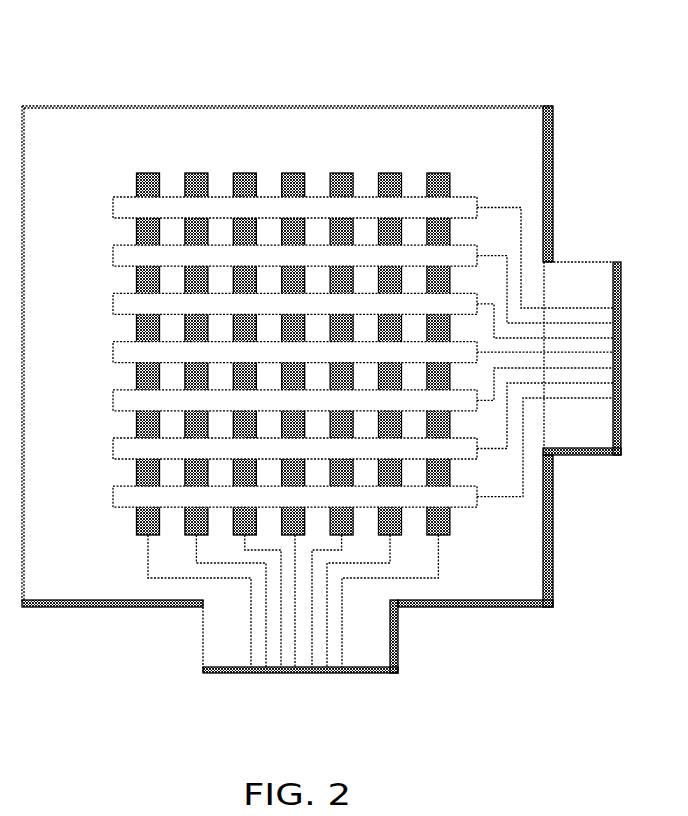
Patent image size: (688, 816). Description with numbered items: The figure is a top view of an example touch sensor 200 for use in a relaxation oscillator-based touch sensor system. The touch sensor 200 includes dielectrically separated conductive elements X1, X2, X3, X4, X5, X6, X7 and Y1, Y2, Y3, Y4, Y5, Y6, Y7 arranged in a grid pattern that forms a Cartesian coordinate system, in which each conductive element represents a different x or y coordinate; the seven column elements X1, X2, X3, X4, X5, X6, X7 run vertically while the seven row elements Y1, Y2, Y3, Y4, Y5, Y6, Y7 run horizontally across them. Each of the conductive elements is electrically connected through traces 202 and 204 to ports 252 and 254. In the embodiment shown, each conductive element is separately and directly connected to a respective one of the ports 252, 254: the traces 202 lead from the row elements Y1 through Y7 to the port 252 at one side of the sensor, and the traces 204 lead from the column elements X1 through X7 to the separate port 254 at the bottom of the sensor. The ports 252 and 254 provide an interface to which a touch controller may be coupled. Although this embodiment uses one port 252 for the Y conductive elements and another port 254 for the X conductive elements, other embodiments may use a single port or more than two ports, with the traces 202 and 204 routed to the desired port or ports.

The touch sensor 200 is at (94, 44).
The traces 202 is at (500, 202).
The traces 204 is at (446, 570).
The port 252 is at (622, 286).
The port 254 is at (381, 674).
The conductive element X1 is at (438, 173).
The conductive element X2 is at (390, 173).
The conductive element X3 is at (342, 173).
The conductive element X4 is at (293, 173).
The conductive element X5 is at (245, 173).
The conductive element X6 is at (196, 173).
The conductive element X7 is at (148, 173).
The conductive element Y1 is at (113, 497).
The conductive element Y2 is at (113, 449).
The conductive element Y3 is at (113, 401).
The conductive element Y4 is at (113, 352).
The conductive element Y5 is at (113, 304).
The conductive element Y6 is at (113, 256).
The conductive element Y7 is at (113, 208).